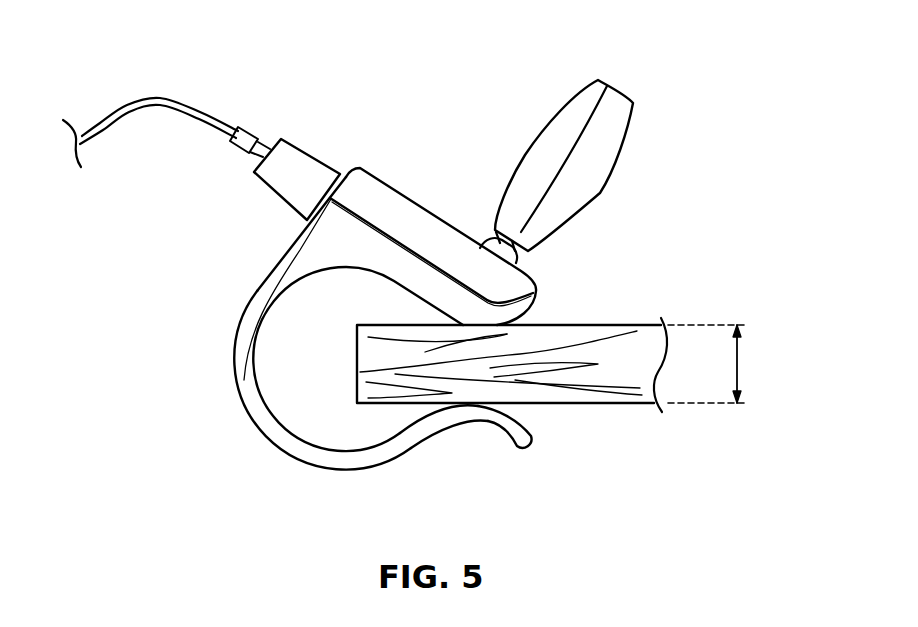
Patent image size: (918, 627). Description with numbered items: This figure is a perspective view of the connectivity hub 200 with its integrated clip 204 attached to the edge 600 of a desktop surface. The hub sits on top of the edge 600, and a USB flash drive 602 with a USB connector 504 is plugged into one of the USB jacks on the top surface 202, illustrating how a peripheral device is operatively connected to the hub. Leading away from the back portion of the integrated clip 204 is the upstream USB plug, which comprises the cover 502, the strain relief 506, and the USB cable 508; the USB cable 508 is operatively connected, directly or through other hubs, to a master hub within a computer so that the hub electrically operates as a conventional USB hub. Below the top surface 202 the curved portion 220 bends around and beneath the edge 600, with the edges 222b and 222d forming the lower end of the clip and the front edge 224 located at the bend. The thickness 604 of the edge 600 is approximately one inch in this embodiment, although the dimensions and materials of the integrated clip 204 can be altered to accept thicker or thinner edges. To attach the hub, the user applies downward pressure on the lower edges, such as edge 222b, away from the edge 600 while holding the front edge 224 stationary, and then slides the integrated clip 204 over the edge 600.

The connectivity hub 200 is at (211, 397).
The top surface 202 is at (393, 189).
The integrated clip 204 is at (257, 290).
The curved portion 220 is at (400, 339).
The edge 222b is at (533, 438).
The clip lower segment 222d is at (483, 427).
The front edge 224 is at (383, 283).
The cover 502 is at (313, 158).
The USB connector 504 is at (518, 257).
The strain relief 506 is at (247, 134).
The USB cable 508 is at (172, 100).
The edge 600 is at (640, 323).
The USB flash drive 602 is at (614, 160).
The thickness 604 is at (738, 364).